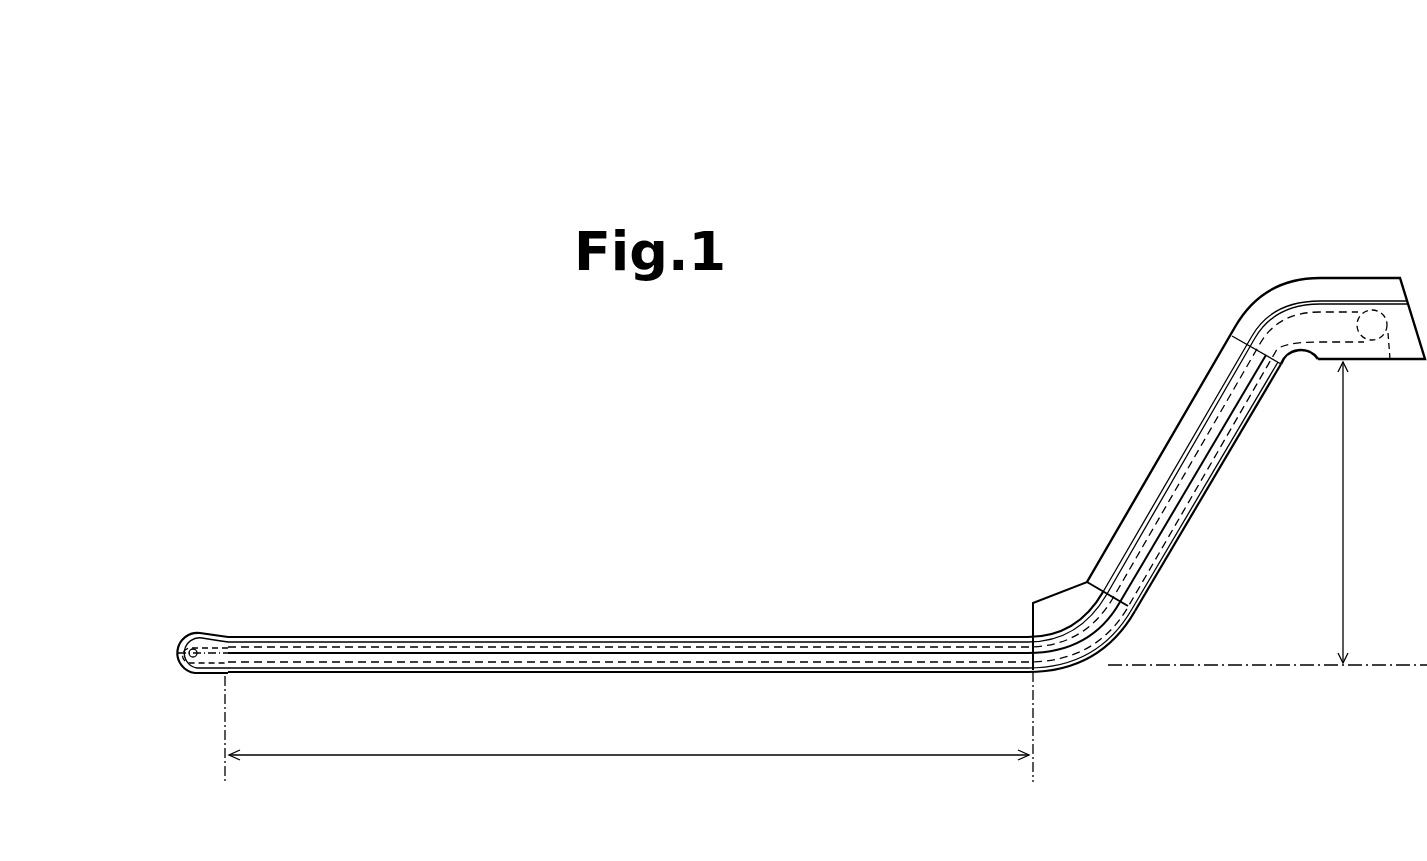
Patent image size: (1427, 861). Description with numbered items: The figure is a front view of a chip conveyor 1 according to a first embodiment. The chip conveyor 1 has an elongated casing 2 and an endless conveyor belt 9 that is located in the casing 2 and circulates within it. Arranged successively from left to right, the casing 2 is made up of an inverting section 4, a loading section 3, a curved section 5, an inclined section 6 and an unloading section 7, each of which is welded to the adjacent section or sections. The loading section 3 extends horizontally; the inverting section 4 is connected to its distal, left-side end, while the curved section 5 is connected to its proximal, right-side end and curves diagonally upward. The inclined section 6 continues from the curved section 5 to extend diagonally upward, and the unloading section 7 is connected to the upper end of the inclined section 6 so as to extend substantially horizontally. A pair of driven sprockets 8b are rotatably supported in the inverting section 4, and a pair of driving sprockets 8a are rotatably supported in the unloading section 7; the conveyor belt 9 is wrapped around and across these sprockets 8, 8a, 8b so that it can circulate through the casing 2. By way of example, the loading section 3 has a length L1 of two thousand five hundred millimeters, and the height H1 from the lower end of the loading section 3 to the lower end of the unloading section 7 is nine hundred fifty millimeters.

The chip conveyor 1 is at (902, 445).
The casing 2 is at (1105, 543).
The loading section 3 is at (803, 636).
The inverting section 4 is at (212, 632).
The curved section 5 is at (1085, 581).
The inclined section 6 is at (1200, 380).
The unloading section 7 is at (1358, 277).
The sprockets 8 is at (1147, 452).
The driving sprockets 8a is at (1389, 361).
The driven sprockets 8b is at (186, 677).
The conveyor belt 9 is at (1257, 273).
The length of the loading section L1 is at (605, 757).
The height from the loading section to the unloading section H1 is at (1343, 542).